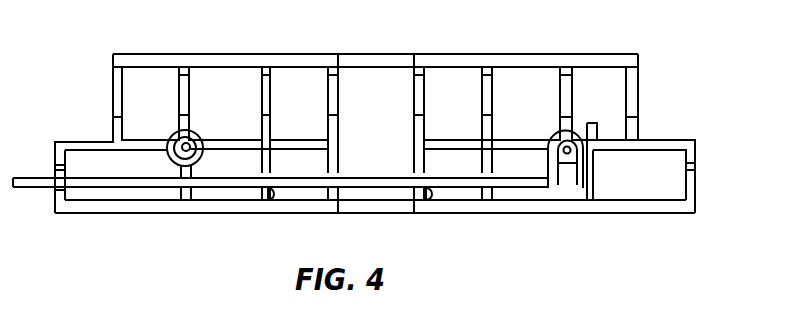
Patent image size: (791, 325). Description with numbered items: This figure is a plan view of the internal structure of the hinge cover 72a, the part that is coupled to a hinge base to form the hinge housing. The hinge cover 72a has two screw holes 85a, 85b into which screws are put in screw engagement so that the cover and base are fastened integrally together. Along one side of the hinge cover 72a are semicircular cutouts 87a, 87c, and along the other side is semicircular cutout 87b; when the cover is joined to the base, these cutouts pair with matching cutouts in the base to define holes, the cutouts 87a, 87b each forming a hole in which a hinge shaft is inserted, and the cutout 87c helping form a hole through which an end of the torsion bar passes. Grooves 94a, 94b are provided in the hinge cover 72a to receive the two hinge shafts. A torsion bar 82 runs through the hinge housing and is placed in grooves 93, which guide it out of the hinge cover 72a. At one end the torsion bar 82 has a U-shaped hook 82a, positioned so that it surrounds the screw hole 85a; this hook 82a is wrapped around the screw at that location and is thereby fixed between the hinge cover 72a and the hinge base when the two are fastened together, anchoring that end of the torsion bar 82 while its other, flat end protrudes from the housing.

The hinge cover 72a is at (362, 53).
The torsion bar 82 is at (527, 181).
The hook 82a is at (550, 128).
The screw hole 85a is at (568, 140).
The screw hole 85b is at (188, 146).
The semicircular cutout 87a is at (637, 100).
The semicircular cutout 87b is at (112, 92).
The semicircular cutout 87c is at (691, 178).
The grooves 93 is at (269, 214).
The groove 94a is at (482, 85).
The groove 94b is at (182, 86).